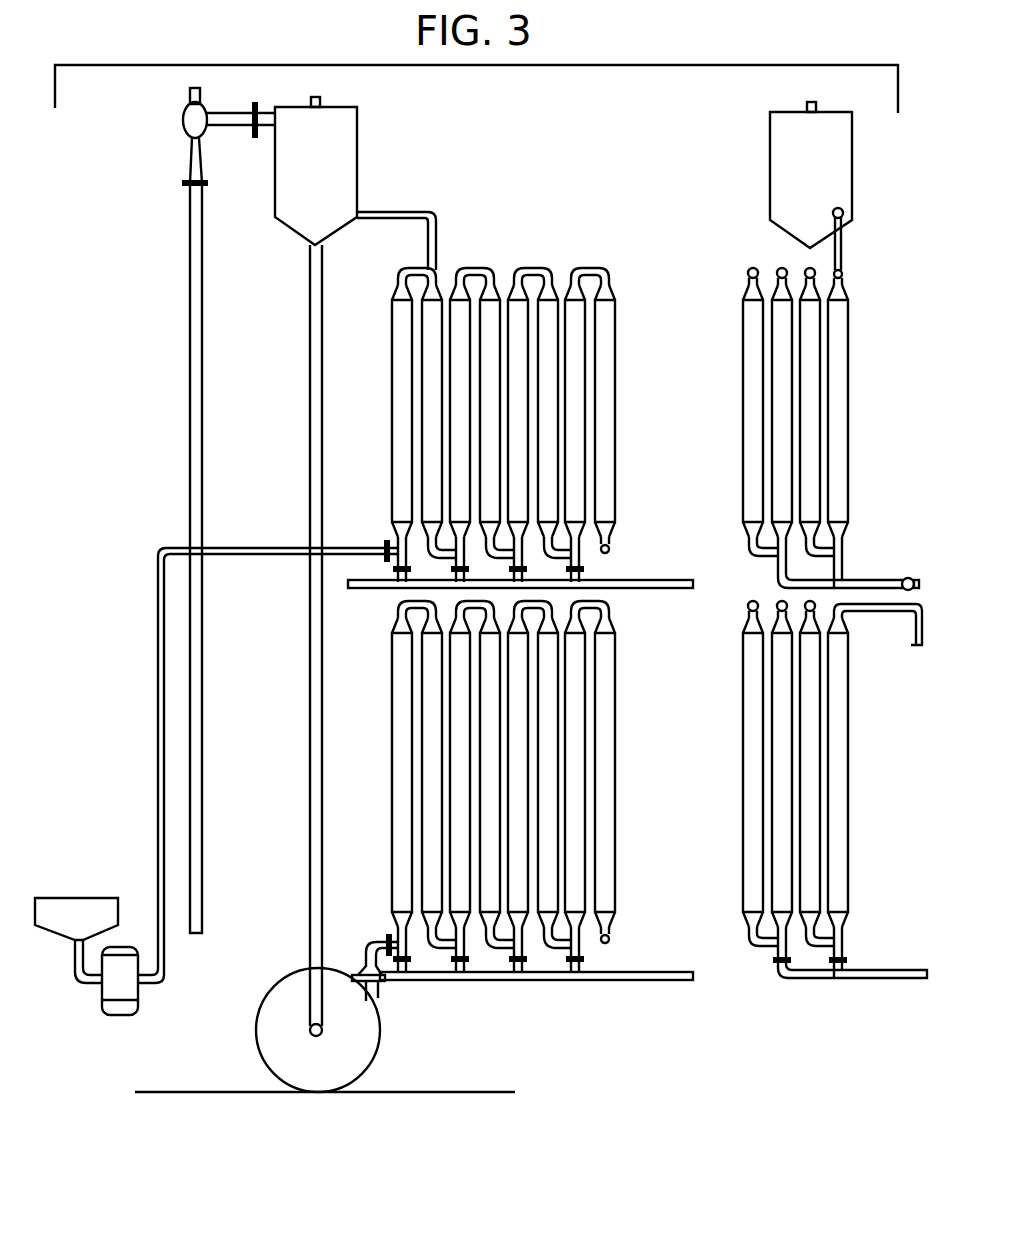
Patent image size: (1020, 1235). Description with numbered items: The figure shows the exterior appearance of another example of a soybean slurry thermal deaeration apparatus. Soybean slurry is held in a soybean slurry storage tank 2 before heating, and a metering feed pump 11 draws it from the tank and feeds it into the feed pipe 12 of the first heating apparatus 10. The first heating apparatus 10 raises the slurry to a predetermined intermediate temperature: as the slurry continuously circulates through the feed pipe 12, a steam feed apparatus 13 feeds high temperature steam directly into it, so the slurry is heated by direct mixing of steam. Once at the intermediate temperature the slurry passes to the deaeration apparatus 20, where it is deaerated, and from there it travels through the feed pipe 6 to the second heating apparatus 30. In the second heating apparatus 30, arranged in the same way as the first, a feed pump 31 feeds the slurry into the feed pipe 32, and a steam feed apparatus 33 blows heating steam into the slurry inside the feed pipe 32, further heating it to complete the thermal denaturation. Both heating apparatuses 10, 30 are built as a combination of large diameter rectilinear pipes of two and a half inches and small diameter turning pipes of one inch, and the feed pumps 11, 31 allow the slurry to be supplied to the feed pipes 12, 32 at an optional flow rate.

The soybean slurry storage tank 2 is at (70, 897).
The feed pipe 6 is at (312, 662).
The first heating apparatus 10 is at (473, 425).
The metering feed pump 11 is at (120, 981).
The feed pipe 12 is at (385, 515).
The steam feed apparatus 13 is at (626, 580).
The deaeration apparatus 20 is at (166, 88).
The second heating apparatus 30 is at (473, 786).
The feed pump 31 is at (372, 1045).
The feed pipe 32 is at (385, 843).
The steam feed apparatus 33 is at (646, 972).